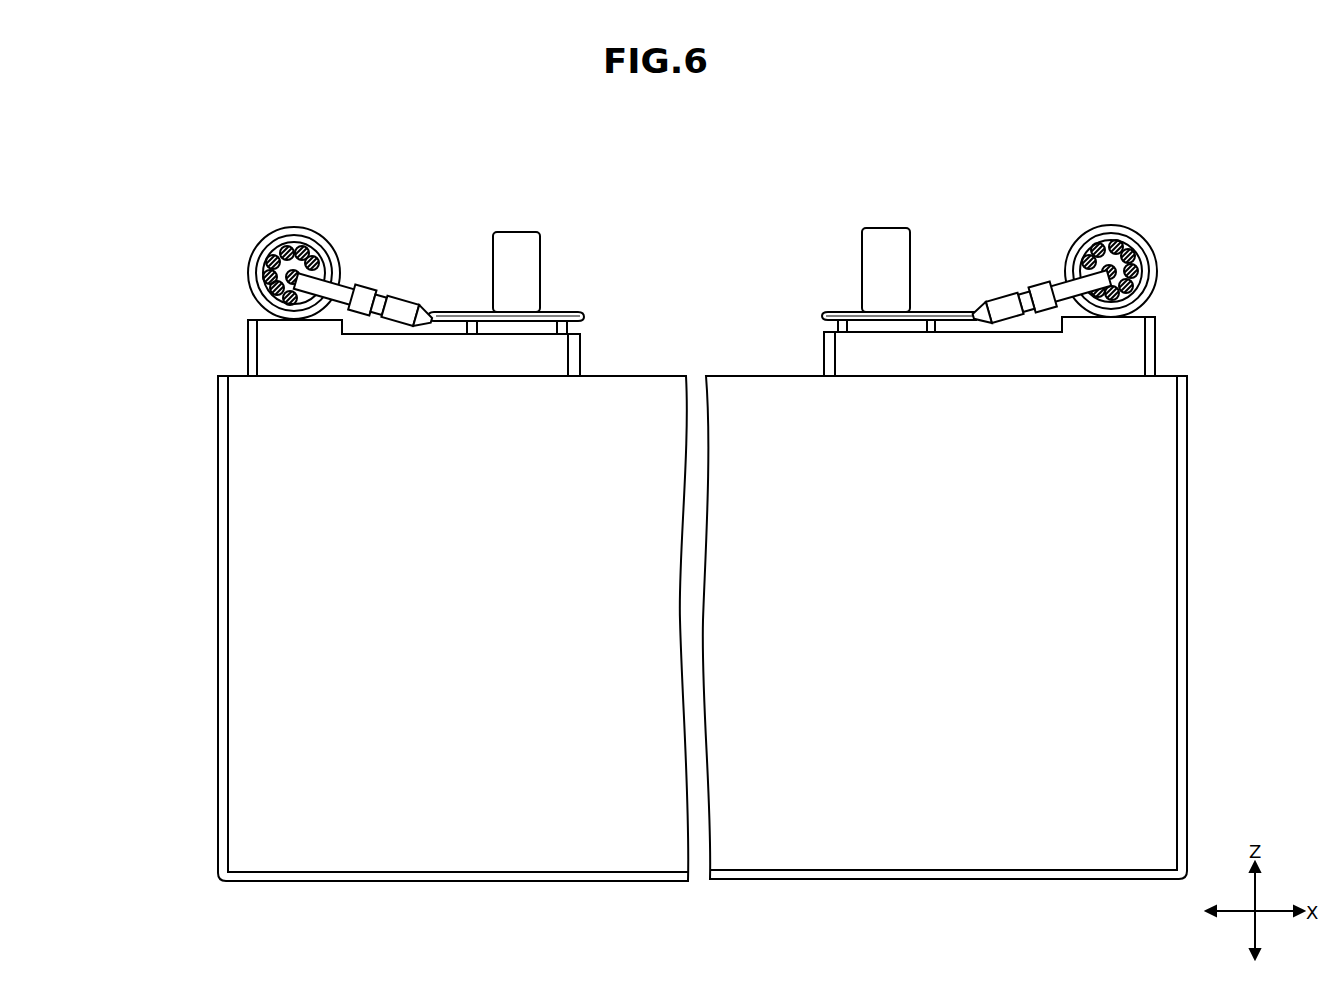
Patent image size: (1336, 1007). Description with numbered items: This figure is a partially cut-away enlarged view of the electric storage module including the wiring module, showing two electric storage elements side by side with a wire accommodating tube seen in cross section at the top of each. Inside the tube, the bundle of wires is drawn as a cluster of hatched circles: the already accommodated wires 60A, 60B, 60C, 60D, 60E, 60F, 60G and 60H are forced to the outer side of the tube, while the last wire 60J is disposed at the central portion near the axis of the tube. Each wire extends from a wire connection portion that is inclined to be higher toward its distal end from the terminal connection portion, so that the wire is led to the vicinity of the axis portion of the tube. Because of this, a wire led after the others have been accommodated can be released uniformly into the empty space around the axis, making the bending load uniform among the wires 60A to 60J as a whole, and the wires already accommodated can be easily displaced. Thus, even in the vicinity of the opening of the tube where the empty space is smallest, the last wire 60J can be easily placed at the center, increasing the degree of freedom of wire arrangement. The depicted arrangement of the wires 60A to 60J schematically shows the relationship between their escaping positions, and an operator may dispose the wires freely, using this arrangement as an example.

The wire 60A is at (1138, 271).
The wire 60B is at (1132, 285).
The wire 60C is at (1112, 300).
The wire 60D is at (1096, 298).
The wire 60E is at (1133, 252).
The wire 60F is at (1118, 240).
The wire 60G is at (1098, 243).
The wire 60H is at (1084, 256).
The wire 60J is at (1102, 271).